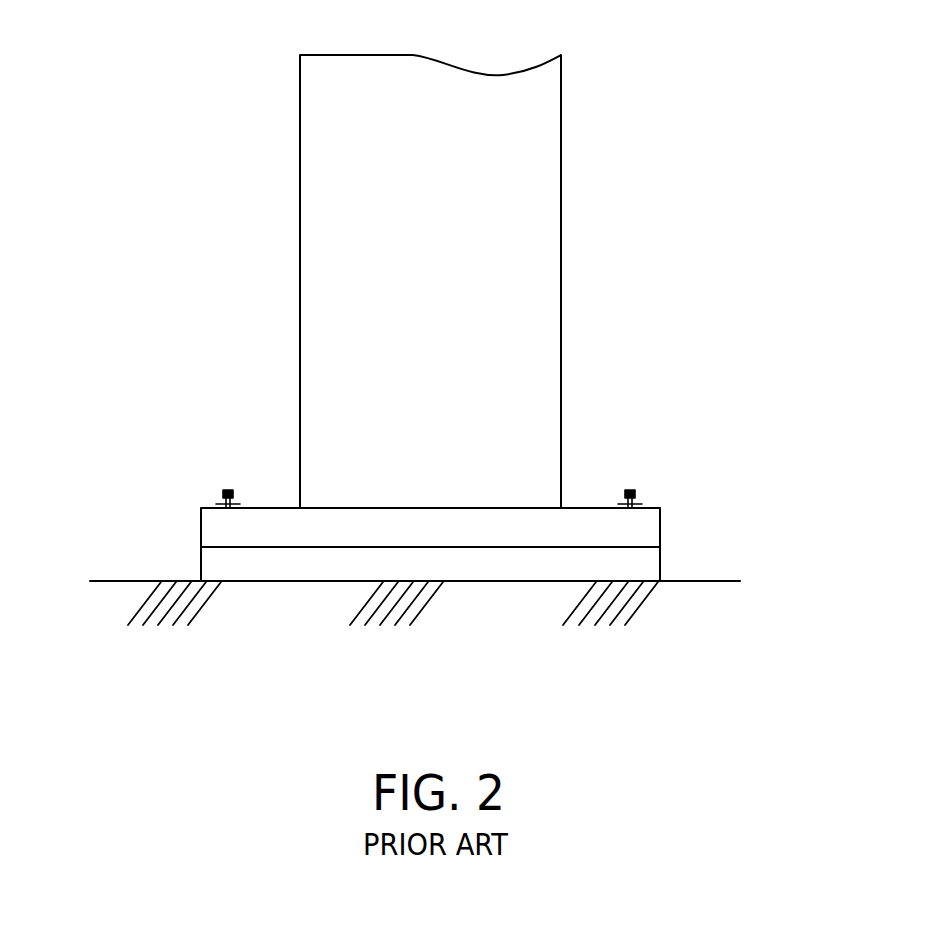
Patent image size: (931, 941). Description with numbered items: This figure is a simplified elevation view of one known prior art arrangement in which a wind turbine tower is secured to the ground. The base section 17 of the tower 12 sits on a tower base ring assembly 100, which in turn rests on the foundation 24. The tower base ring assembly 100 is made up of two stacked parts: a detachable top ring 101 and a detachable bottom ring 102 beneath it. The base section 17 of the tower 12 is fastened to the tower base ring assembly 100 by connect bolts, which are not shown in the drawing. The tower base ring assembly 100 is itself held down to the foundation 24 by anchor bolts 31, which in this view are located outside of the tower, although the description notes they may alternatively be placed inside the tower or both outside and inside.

The tower 12 is at (278, 152).
The base section 17 is at (350, 310).
The foundation 24 is at (123, 581).
The anchor bolts 31 is at (223, 502).
The tower base ring assembly 100 is at (501, 430).
The detachable top ring 101 is at (640, 530).
The detachable bottom ring 102 is at (501, 564).